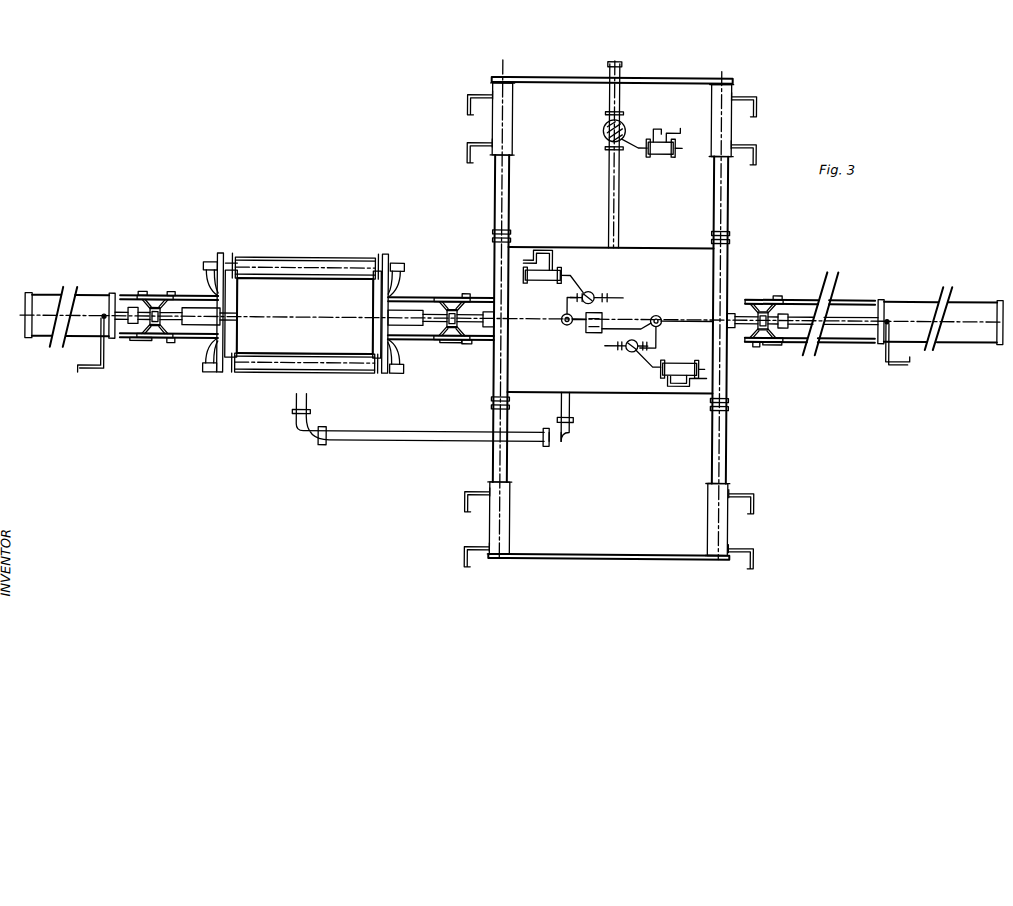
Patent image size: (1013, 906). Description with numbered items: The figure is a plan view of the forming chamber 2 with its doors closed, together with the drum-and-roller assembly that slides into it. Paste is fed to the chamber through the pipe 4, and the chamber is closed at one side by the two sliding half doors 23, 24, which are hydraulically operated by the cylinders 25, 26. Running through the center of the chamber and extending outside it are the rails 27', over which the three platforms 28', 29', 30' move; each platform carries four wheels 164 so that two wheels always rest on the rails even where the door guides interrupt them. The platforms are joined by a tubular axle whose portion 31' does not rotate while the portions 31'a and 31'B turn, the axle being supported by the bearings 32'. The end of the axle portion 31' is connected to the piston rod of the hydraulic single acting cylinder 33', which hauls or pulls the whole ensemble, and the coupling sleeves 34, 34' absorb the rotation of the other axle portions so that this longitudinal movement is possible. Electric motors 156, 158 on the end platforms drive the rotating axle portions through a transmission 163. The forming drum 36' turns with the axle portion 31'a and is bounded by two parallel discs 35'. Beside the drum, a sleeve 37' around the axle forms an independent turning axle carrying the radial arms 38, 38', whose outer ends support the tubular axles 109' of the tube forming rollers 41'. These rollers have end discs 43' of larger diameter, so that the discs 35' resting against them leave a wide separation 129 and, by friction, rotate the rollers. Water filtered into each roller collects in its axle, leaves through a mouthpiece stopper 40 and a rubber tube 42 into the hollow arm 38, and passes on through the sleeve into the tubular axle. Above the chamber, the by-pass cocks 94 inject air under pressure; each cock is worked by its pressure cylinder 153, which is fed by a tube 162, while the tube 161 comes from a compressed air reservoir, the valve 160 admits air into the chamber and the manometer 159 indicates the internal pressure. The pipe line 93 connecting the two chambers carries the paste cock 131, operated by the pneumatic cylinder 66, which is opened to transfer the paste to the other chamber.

The forming chamber 2 is at (660, 273).
The pipe 4 is at (420, 435).
The half door 23 is at (498, 375).
The half door 24 is at (502, 266).
The hydraulic cylinder 25 is at (537, 120).
The hydraulic cylinder 26 is at (533, 524).
The rails 27' is at (494, 327).
The platform 28' is at (128, 270).
The platform 29' is at (588, 279).
The platform 30' is at (805, 349).
The tubular axle portion 31' is at (482, 289).
The tubular axle portion 31'a is at (304, 272).
The tubular axle portion 31'B is at (599, 320).
The bearing 32' is at (445, 362).
The hydraulic single acting cylinder 33' is at (513, 306).
The coupling sleeve 34 is at (849, 343).
The coupling sleeve 34' is at (92, 349).
The parallel disc 35' is at (300, 330).
The forming drum 36' is at (305, 316).
The sleeve 37' is at (283, 317).
The radial arm 38 is at (291, 385).
The radial arm 38' is at (286, 250).
The mouthpiece stopper 40 is at (209, 264).
The tube forming roller 41' is at (305, 317).
The rubber tube 42 is at (210, 275).
The end disc 43' is at (304, 308).
The pneumatic cylinder 66 is at (658, 156).
The pipe line 93 is at (620, 70).
The by-pass cock 94 is at (596, 295).
The tubular axle 109' is at (232, 249).
The separation 129 is at (321, 275).
The paste cock 131 is at (602, 133).
The pressure cylinder 153 is at (547, 277).
The electric motor 156 is at (148, 340).
The electric motor 158 is at (763, 312).
The manometer 159 is at (588, 331).
The valve 160 is at (562, 323).
The tube 161 is at (546, 252).
The tube 162 is at (694, 380).
The transmission 163 is at (172, 345).
The wheel 164 is at (172, 294).